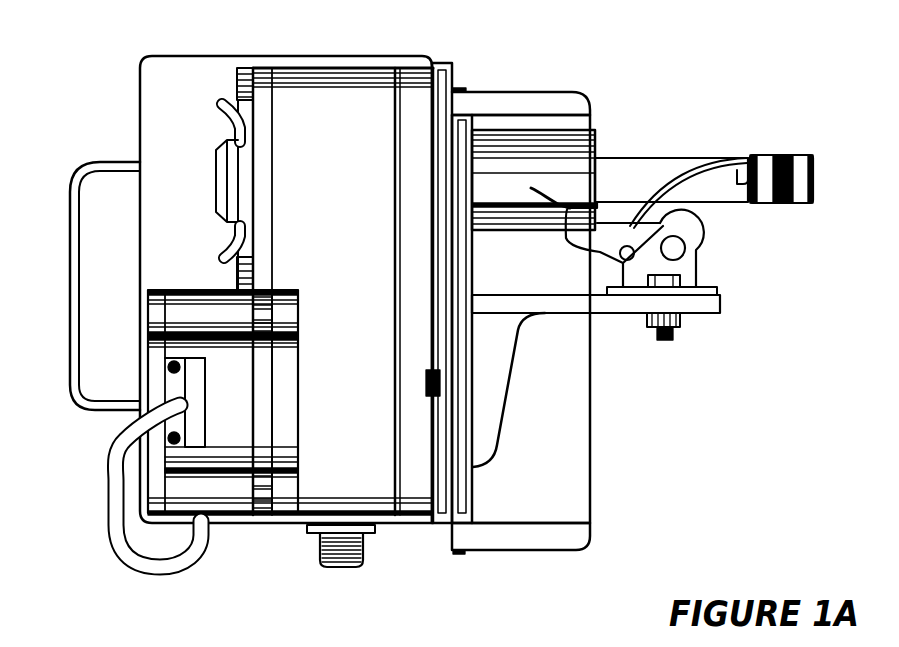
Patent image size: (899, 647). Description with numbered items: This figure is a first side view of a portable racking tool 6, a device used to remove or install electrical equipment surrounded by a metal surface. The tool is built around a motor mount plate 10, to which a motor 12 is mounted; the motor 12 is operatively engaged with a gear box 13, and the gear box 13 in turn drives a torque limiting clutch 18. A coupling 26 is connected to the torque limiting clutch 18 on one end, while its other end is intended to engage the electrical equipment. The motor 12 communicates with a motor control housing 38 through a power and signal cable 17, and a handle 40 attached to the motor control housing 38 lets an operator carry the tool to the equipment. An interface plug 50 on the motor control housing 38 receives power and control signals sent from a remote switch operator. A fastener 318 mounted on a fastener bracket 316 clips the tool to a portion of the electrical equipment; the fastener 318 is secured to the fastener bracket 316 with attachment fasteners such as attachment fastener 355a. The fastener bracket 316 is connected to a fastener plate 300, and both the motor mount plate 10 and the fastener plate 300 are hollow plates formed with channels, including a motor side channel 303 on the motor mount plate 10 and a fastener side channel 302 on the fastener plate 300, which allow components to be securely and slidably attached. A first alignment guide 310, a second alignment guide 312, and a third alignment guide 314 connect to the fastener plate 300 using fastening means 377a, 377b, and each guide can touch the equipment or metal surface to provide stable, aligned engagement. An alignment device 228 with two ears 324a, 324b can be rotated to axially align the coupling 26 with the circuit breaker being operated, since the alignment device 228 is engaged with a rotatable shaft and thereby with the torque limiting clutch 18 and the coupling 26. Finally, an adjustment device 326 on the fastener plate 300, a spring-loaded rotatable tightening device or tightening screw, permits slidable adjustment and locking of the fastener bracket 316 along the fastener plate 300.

The portable racking tool 6 is at (672, 507).
The motor mount plate 10 is at (443, 62).
The motor 12 is at (240, 437).
The gear box 13 is at (343, 100).
The power and signal cable 17 is at (107, 487).
The torque limiting clutch 18 is at (596, 140).
The coupling 26 is at (790, 155).
The motor control housing 38 is at (140, 88).
The handle 40 is at (70, 285).
The interface plug 50 is at (363, 550).
The alignment device 228 is at (218, 178).
The fastener plate 300 is at (474, 500).
The fastener side channel 302 is at (466, 268).
The motor side channel 303 is at (437, 243).
The first alignment guide 310 is at (522, 92).
The second alignment guide 312 is at (522, 550).
The third alignment guide 314 is at (592, 405).
The fastener bracket 316 is at (721, 310).
The fastener 318 is at (745, 156).
The ear 324a is at (230, 125).
The ear 324b is at (228, 238).
The adjustment device 326 is at (426, 383).
The attachment fastener 355a is at (680, 327).
The fastening means 377a is at (462, 88).
The fastening means 377b is at (460, 554).